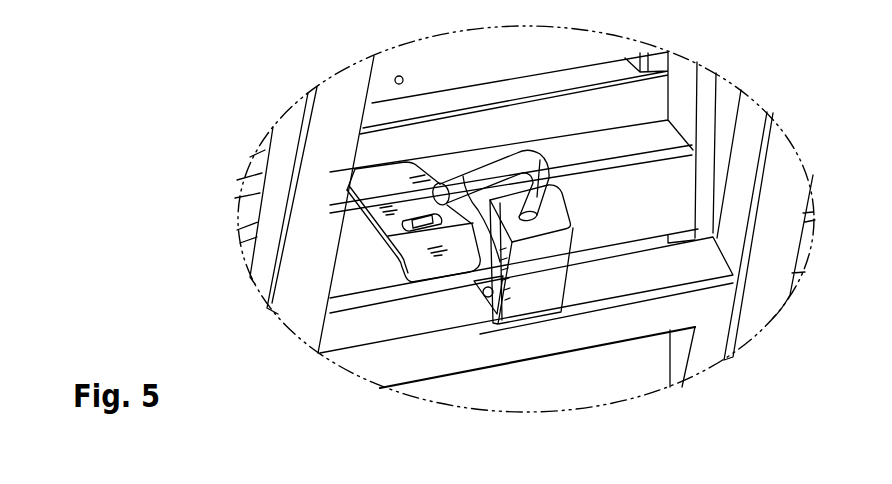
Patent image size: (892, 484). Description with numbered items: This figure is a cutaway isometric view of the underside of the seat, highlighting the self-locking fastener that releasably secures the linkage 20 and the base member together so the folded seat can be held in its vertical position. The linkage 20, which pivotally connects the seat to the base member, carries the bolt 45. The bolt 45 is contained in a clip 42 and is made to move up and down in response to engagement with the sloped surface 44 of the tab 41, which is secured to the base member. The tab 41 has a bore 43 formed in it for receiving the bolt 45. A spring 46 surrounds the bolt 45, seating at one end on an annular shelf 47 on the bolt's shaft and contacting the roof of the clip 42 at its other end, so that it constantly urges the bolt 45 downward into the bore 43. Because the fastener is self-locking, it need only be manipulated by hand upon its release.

The linkage 20 is at (277, 175).
The tab 41 is at (392, 232).
The clip 42 is at (568, 275).
The bore 43 is at (398, 258).
The sloped surface 44 is at (443, 260).
The bolt 45 is at (514, 154).
The spring 46 is at (463, 176).
The annular shelf 47 is at (497, 282).